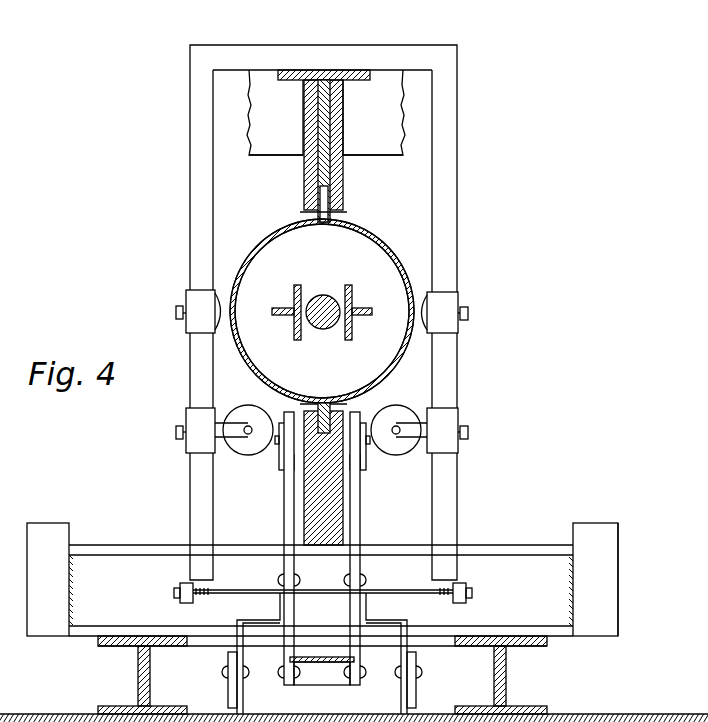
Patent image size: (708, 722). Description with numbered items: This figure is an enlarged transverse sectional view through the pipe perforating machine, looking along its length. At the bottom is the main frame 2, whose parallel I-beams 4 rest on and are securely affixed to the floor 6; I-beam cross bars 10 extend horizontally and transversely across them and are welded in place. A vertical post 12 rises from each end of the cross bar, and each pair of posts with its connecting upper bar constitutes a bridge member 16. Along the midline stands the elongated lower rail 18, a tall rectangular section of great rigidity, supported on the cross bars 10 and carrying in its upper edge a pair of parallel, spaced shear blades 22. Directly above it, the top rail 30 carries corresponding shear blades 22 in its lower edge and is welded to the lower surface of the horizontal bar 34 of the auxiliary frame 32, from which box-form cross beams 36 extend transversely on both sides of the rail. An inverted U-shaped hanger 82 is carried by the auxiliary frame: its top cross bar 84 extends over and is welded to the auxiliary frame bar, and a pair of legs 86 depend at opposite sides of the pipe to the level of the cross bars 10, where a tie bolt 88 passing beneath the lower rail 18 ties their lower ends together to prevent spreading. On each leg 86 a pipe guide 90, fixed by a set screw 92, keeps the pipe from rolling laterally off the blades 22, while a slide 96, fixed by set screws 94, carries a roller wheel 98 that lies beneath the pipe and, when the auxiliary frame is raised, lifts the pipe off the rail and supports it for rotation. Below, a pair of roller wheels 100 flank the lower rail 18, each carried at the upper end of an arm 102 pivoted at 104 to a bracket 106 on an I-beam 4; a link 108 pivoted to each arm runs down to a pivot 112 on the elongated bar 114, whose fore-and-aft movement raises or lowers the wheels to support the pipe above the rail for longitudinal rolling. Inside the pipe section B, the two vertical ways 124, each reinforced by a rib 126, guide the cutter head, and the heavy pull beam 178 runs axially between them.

The main frame 2 is at (345, 570).
The I-beams 4 is at (138, 676).
The floor 6 is at (628, 714).
The cross bars 10 is at (515, 556).
The vertical post 12 is at (51, 524).
The bridge member 16 is at (627, 574).
The lower rail 18 is at (304, 510).
The shear blades 22 is at (304, 211).
The top rail 30 is at (343, 172).
The auxiliary frame 32 is at (252, 163).
The horizontal bar 34 is at (352, 70).
The cross beams 36 is at (281, 150).
The hangers 82 is at (325, 298).
The top cross bar 84 is at (262, 50).
The legs 86 is at (190, 215).
The tie bolt 88 is at (254, 591).
The pipe guide 90 is at (191, 298).
The set screw 92 is at (176, 313).
The set screws 94 is at (176, 432).
The slide 96 is at (191, 415).
The roller wheel 98 is at (243, 446).
The roller wheels 100 is at (282, 470).
The arm 102 is at (283, 493).
The pivot 104 is at (222, 670).
The bracket 106 is at (228, 692).
The link 108 is at (352, 611).
The pivot 112 is at (277, 680).
The elongated bar 114 is at (322, 668).
The ways 124 is at (294, 290).
The rib 126 is at (284, 316).
The pull beam 178 is at (324, 329).
The ring B is at (389, 244).